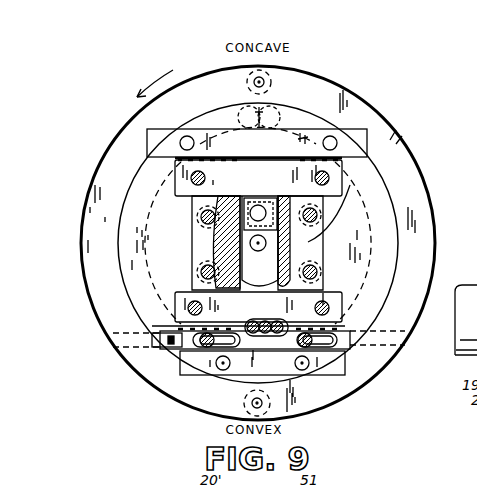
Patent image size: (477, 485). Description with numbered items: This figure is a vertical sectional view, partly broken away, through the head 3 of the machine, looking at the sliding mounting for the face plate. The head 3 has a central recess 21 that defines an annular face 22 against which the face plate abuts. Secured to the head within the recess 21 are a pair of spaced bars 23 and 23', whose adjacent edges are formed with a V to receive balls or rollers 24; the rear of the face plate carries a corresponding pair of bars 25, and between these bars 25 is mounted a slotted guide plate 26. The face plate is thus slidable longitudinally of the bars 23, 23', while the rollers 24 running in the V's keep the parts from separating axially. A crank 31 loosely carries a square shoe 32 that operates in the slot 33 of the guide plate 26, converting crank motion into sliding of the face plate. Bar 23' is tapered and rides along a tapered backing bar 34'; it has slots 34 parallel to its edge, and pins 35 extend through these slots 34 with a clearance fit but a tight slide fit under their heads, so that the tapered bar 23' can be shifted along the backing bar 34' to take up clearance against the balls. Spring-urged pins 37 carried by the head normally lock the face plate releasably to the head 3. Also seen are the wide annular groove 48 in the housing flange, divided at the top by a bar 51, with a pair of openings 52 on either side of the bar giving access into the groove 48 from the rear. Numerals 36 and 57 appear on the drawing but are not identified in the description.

The head 3 is at (378, 108).
The central recess 21 is at (148, 180).
The annular face 22 is at (383, 138).
The bar 23 is at (263, 113).
The tapered bar 23' is at (285, 380).
The balls or rollers 24 is at (240, 373).
The bars 25 is at (338, 177).
The slotted guide plate 26 is at (420, 173).
The crank 31 is at (193, 200).
The shoe 32 is at (215, 232).
The slot 33 is at (242, 257).
The slots 34 is at (233, 385).
The tapered backing bar 34' is at (209, 406).
The pins 35 is at (185, 342).
The slide bar 36 is at (165, 345).
The pins 37 is at (257, 80).
The annular groove 48 is at (148, 292).
The bar 51 is at (277, 106).
The openings 52 is at (243, 110).
The bolt marker 57 is at (303, 100).